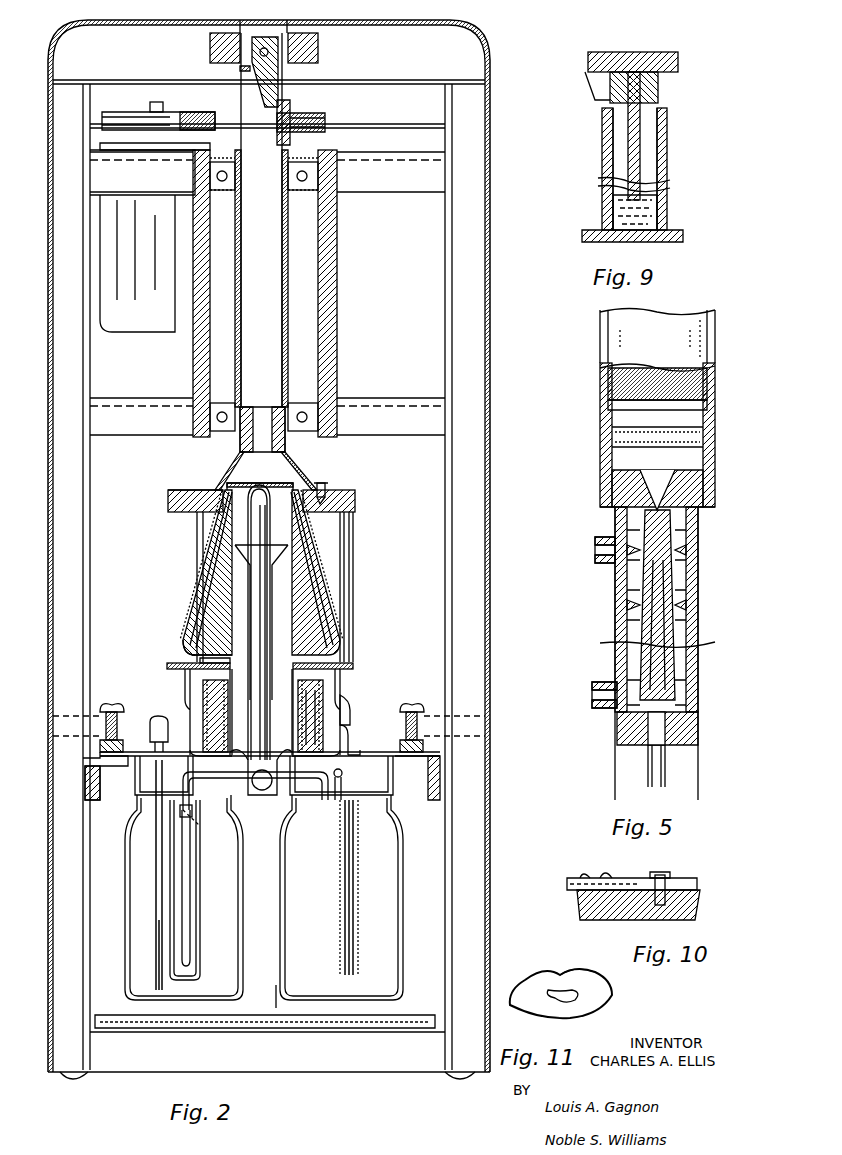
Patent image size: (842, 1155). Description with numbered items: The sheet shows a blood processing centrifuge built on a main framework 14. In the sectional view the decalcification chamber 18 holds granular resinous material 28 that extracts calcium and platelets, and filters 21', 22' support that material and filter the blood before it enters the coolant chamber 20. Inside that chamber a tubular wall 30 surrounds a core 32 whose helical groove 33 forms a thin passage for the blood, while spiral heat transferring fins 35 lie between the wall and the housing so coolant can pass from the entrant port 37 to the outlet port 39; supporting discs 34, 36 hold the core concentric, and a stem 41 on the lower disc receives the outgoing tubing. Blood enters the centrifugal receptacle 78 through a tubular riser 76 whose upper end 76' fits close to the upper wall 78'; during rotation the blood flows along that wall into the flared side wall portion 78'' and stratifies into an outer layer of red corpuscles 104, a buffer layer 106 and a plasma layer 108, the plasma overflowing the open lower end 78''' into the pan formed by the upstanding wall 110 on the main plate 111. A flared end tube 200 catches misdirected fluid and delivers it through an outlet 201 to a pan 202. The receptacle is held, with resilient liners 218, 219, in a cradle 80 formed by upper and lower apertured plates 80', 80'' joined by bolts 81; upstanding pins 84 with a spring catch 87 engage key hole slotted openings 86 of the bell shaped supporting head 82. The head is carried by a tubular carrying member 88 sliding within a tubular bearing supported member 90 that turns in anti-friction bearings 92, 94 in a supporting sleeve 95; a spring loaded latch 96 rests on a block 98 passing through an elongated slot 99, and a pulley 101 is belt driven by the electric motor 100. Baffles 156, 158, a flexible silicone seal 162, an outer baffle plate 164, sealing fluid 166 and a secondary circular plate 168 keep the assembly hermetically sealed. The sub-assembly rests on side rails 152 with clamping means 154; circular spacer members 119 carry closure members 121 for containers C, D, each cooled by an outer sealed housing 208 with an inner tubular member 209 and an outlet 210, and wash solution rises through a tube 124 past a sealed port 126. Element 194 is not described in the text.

In FIG. 2, the main framework 14 is at (76, 542).
In FIG. 5, the decalcification chamber 18 is at (705, 340).
In FIG. 5, the coolant chamber 20 is at (704, 604).
In FIG. 5, the filter 21' is at (682, 408).
In FIG. 5, the filter 22' is at (684, 437).
In FIG. 5, the granular resinous material 28 is at (708, 378).
In FIG. 5, the tubular wall 30 is at (700, 624).
In FIG. 5, the core 32 is at (680, 538).
In FIG. 5, the helical groove 33 is at (630, 588).
In FIG. 5, the supporting disc 34 is at (716, 468).
In FIG. 5, the spiral heat transferring fins 35 is at (630, 610).
In FIG. 5, the supporting disc 36 is at (690, 750).
In FIG. 5, the entrant port 37 is at (600, 706).
In FIG. 5, the outlet port 39 is at (608, 538).
In FIG. 5, the stem 41 is at (648, 758).
In FIG. 2, the tubular riser 76 is at (275, 632).
In FIG. 2, the upper end of riser 76' is at (252, 622).
In FIG. 2, the centrifugal receptacle 78 is at (261, 565).
In FIG. 2, the upper wall of receptacle 78' is at (260, 472).
In FIG. 2, the flared side wall portion 78'' is at (173, 632).
In FIG. 2, the open lower end 78''' is at (261, 779).
In FIG. 2, the cradle 80 is at (294, 587).
In FIG. 2, the upper apertured plate 80' is at (277, 501).
In FIG. 10, the upper apertured plate 80' is at (657, 905).
In FIG. 2, the lower apertured plate 80'' is at (276, 660).
In FIG. 9, the lower apertured plate 80'' is at (650, 49).
In FIG. 2, the bolts 81 is at (348, 588).
In FIG. 2, the bell shaped supporting head 82 is at (295, 470).
In FIG. 10, the bell shaped supporting head 82 is at (698, 882).
In FIG. 11, the bell shaped supporting head 82 is at (600, 972).
In FIG. 2, the upstanding pins 84 is at (322, 486).
In FIG. 10, the upstanding pins 84 is at (666, 874).
In FIG. 11, the key hole slotted openings 86 is at (570, 975).
In FIG. 10, the spring catch 87 is at (636, 878).
In FIG. 2, the tubular carrying member 88 is at (283, 335).
In FIG. 2, the tubular bearing supported member 90 is at (288, 300).
In FIG. 2, the anti-friction bearing 92 is at (298, 190).
In FIG. 2, the anti-friction bearing 94 is at (300, 402).
In FIG. 2, the supporting sleeve 95 is at (330, 270).
In FIG. 2, the spring loaded latch 96 is at (254, 100).
In FIG. 2, the block 98 is at (282, 130).
In FIG. 2, the elongated slot 99 is at (288, 76).
In FIG. 2, the electric motor 100 is at (112, 258).
In FIG. 2, the pulley 101 is at (318, 118).
In FIG. 2, the outer layer of red corpuscles 104 is at (206, 598).
In FIG. 2, the buffer layer 106 is at (206, 574).
In FIG. 2, the plasma layer 108 is at (206, 552).
In FIG. 2, the upstanding wall 110 is at (205, 688).
In FIG. 9, the upstanding wall 110 is at (606, 128).
In FIG. 2, the main plate 111 is at (372, 752).
In FIG. 9, the main plate 111 is at (675, 232).
In FIG. 2, the circular spacer members 119 is at (390, 792).
In FIG. 2, the closure members 121 is at (362, 796).
In FIG. 2, the tube 124 is at (155, 872).
In FIG. 2, the sealed port 126 is at (150, 728).
In FIG. 2, the side rails 152 is at (96, 758).
In FIG. 2, the clamping means 154 is at (140, 708).
In FIG. 2, the outer baffle means 156 is at (347, 714).
In FIG. 2, the outer baffle means 158 is at (346, 736).
In FIG. 9, the flexible silicone seal 162 is at (660, 86).
In FIG. 2, the outer baffle plate 164 is at (330, 690).
In FIG. 9, the outer baffle plate 164 is at (668, 136).
In FIG. 9, the sealing fluid 166 is at (650, 210).
In FIG. 2, the secondary circular plate 168 is at (325, 694).
In FIG. 9, the secondary circular plate 168 is at (628, 140).
In FIG. 2, the hub 194 is at (100, 115).
In FIG. 2, the flared end tube 200 is at (255, 548).
In FIG. 2, the outlet 201 is at (274, 986).
In FIG. 2, the pan 202 is at (402, 1016).
In FIG. 2, the outer sealed housing 208 is at (200, 912).
In FIG. 2, the inner tubular member 209 is at (195, 878).
In FIG. 2, the outlet 210 is at (202, 826).
In FIG. 2, the resilient liner 218 is at (190, 492).
In FIG. 2, the resilient liner 219 is at (196, 664).
In FIG. 2, the container C is at (395, 973).
In FIG. 2, the container D is at (130, 964).